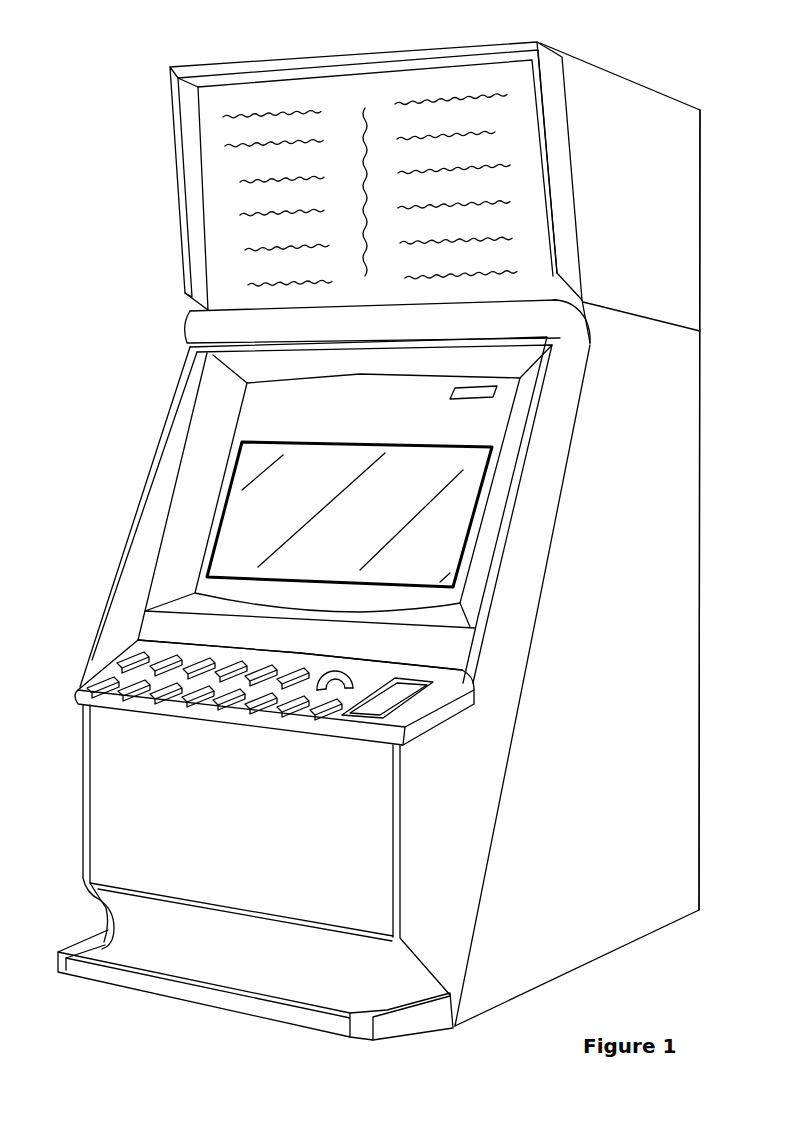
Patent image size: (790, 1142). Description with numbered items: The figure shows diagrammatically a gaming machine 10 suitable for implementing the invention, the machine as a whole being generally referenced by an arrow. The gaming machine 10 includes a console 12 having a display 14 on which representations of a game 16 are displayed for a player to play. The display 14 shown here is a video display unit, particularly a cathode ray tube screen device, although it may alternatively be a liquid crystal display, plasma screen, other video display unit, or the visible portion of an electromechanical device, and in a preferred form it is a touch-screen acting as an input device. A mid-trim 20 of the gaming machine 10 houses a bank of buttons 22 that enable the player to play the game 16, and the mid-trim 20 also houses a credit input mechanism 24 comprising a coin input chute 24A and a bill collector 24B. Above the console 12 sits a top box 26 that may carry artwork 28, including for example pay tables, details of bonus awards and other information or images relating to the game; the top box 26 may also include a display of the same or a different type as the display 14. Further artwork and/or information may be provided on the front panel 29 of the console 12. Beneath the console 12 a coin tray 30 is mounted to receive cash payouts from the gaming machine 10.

The gaming machine 10 is at (660, 78).
The console 12 is at (657, 440).
The display 14 is at (193, 552).
The game 16 is at (227, 502).
The mid-trim 20 is at (76, 692).
The bank of buttons 22 is at (131, 701).
The credit input mechanism 24 is at (433, 653).
The coin input chute 24A is at (338, 668).
The bill collector 24B is at (373, 707).
The top box 26 is at (175, 258).
The artwork 28 is at (235, 152).
The front panel 29 is at (100, 807).
The coin tray 30 is at (52, 965).